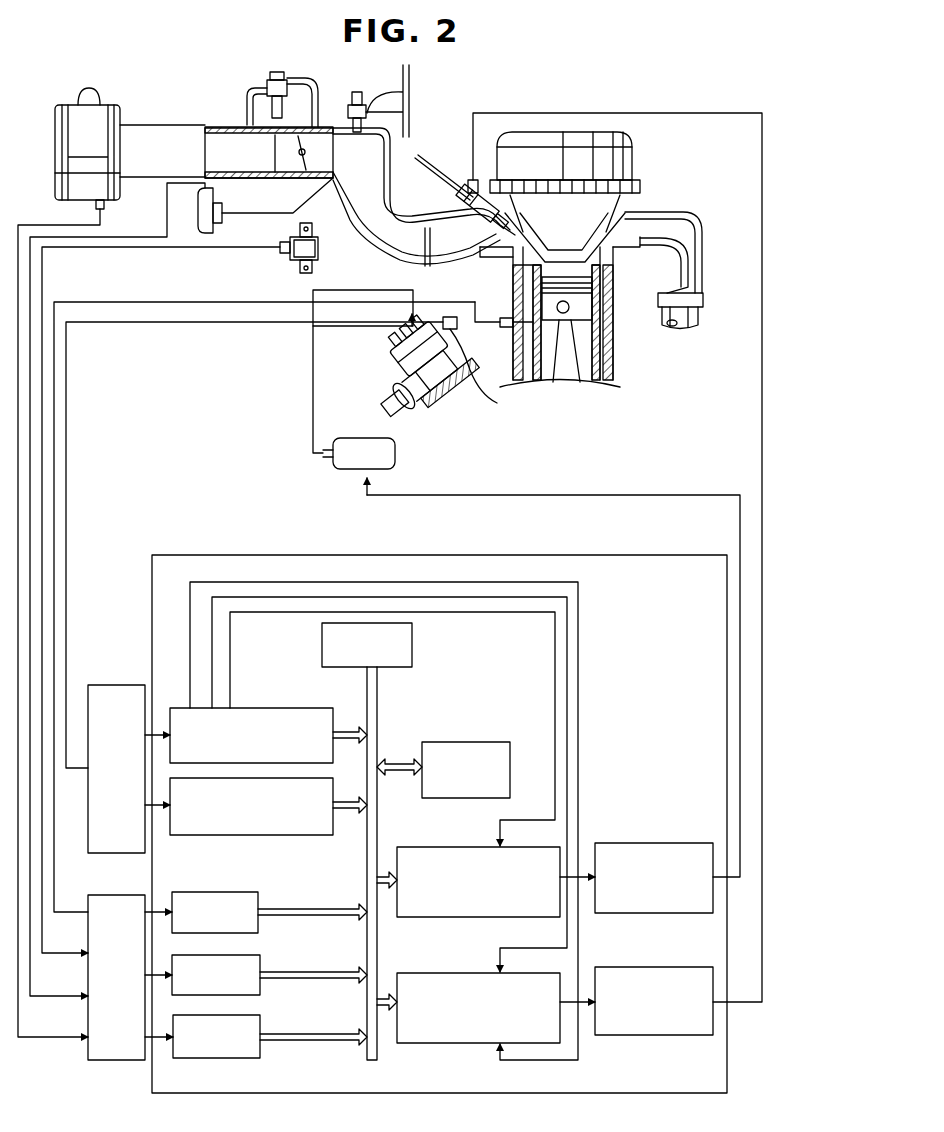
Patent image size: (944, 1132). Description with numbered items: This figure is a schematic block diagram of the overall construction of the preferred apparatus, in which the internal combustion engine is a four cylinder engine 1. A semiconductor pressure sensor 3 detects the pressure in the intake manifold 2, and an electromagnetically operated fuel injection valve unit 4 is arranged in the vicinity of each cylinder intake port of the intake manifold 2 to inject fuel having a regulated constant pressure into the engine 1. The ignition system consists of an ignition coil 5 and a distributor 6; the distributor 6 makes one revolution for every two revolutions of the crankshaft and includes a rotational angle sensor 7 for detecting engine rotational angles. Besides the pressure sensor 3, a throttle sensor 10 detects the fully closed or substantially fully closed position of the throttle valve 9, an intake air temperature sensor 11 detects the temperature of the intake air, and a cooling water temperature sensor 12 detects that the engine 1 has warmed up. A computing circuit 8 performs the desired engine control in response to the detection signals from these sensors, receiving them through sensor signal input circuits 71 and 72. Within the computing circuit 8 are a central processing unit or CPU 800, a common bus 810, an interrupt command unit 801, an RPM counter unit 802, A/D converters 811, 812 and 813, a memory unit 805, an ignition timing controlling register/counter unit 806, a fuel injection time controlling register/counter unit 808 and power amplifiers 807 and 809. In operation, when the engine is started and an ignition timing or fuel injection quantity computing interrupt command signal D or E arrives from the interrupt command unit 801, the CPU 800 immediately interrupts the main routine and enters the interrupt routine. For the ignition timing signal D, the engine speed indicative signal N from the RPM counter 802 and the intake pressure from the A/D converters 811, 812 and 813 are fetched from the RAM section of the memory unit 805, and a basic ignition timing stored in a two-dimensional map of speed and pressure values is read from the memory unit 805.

The engine 1 is at (672, 94).
The intake manifold 2 is at (383, 146).
The semiconductor pressure sensor 3 is at (218, 230).
The fuel injection valve unit 4 is at (462, 207).
The ignition coil 5 is at (395, 453).
The distributor 6 is at (415, 367).
The rotational angle sensor 7 is at (456, 329).
The computing circuit 8 is at (690, 555).
The throttle valve 9 is at (310, 152).
The throttle sensor 10 is at (310, 262).
The intake air temperature sensor 11 is at (95, 207).
The cooling water temperature sensor 12 is at (505, 318).
The sensor signal input circuit 71 is at (118, 685).
The sensor signal input circuit 72 is at (113, 1060).
The central processing unit (CPU) 800 is at (412, 655).
The interrupt command unit 801 is at (270, 708).
The RPM counter unit 802 is at (283, 835).
The memory unit 805 is at (497, 742).
The ignition timing controlling register/counter unit 806 is at (433, 847).
The power amplifier 807 is at (665, 843).
The fuel injection time controlling register/counter unit 808 is at (420, 973).
The power amplifier 809 is at (630, 967).
The common bus 810 is at (377, 705).
The A/D converter 811 is at (242, 892).
The A/D converter 812 is at (262, 963).
The A/D converter 813 is at (262, 1022).